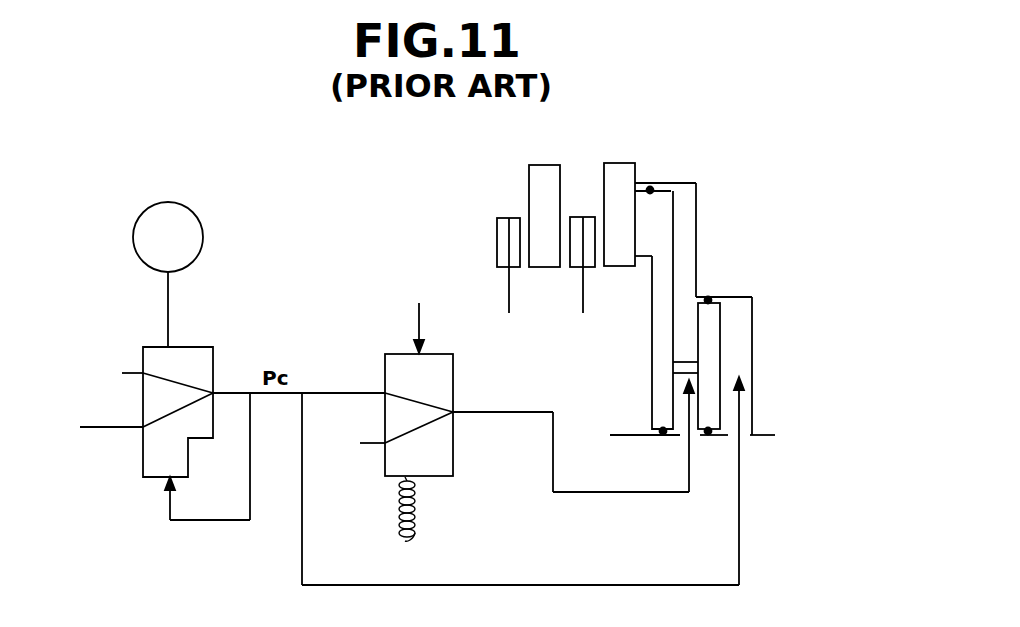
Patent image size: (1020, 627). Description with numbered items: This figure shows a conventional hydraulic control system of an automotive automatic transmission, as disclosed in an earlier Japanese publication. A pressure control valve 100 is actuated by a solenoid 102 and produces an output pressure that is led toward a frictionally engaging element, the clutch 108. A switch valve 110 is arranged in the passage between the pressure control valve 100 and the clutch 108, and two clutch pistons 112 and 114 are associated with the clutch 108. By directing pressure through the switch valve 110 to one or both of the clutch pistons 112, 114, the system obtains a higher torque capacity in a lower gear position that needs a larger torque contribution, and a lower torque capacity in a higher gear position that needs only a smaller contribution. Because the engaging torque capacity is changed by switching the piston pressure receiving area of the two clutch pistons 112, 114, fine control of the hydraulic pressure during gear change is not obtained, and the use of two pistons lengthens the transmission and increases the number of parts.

The pressure control valve 100 is at (203, 345).
The solenoid 102 is at (205, 232).
The clutch 108 is at (652, 165).
The switch valve 110 is at (455, 462).
The clutch piston 112 is at (657, 354).
The clutch piston 114 is at (715, 333).